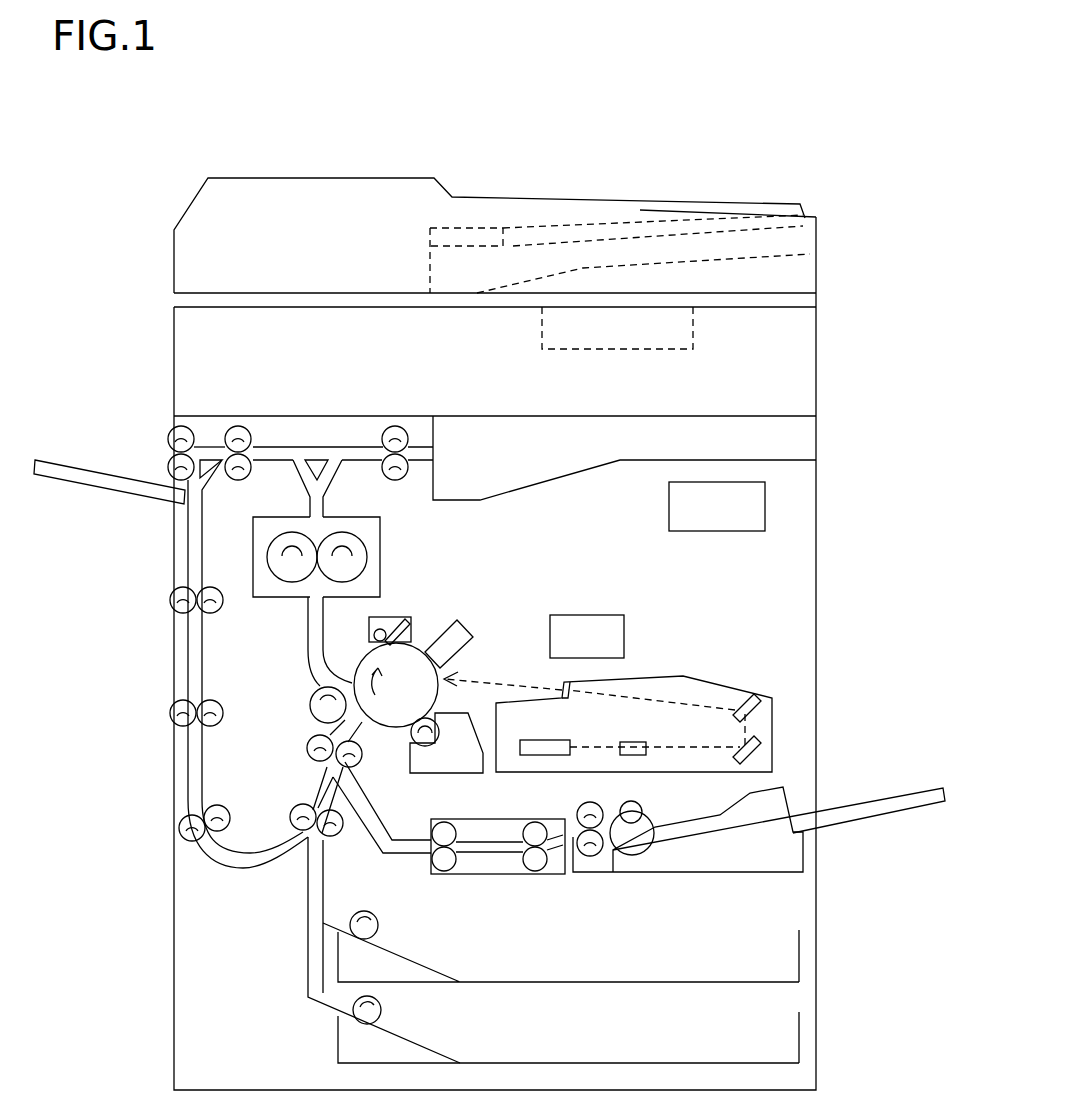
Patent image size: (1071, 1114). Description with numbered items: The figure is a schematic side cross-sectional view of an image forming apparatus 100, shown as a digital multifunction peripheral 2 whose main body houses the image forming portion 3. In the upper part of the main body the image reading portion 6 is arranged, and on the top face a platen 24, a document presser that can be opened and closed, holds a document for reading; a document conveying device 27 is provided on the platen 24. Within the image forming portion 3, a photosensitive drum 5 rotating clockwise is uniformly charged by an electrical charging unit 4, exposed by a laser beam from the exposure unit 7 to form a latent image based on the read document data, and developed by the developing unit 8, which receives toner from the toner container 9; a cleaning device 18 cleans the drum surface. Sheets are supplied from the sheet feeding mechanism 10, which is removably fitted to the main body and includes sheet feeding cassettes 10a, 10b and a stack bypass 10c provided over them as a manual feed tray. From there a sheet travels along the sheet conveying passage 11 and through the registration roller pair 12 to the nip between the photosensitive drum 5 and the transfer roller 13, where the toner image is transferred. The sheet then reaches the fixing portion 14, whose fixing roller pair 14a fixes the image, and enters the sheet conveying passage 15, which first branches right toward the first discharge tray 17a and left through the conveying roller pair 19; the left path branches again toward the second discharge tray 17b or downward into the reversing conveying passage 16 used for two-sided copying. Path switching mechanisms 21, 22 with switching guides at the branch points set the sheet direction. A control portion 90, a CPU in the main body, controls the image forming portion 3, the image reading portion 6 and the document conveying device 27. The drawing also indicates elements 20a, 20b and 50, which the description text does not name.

The image forming apparatus 100 is at (722, 169).
The multifunction peripheral 2 is at (817, 592).
The document conveying device 27 is at (215, 212).
The platen 24 is at (817, 300).
The document 50 is at (615, 350).
The image reading portion 6 is at (188, 368).
The first discharge tray 17a is at (624, 458).
The second discharge tray 17b is at (83, 477).
The control portion 90 is at (765, 507).
The side discharge rollers 20b is at (163, 452).
The conveying roller pair 19 is at (242, 430).
The upper discharge rollers 20a is at (400, 428).
The path switching mechanism 21 is at (313, 473).
The path switching mechanism 22 is at (202, 468).
The sheet conveying passage 15 is at (305, 497).
The fixing portion 14 is at (247, 553).
The fixing roller pair 14a is at (357, 557).
The reversing conveying passage 16 is at (192, 645).
The photosensitive drum 5 is at (380, 713).
The cleaning device 18 is at (390, 620).
The electrical charging unit 4 is at (463, 642).
The image forming portion 3 is at (450, 598).
The transfer roller 13 is at (312, 708).
The registration roller pair 12 is at (320, 758).
The sheet conveying passage 11 is at (312, 865).
The developing unit 8 is at (445, 760).
The toner container 9 is at (598, 625).
The exposure unit 7 is at (662, 690).
The stack bypass 10c is at (845, 796).
The sheet feeding mechanism 10 is at (838, 903).
The sheet feeding cassette 10a is at (782, 962).
The sheet feeding cassette 10b is at (788, 1045).